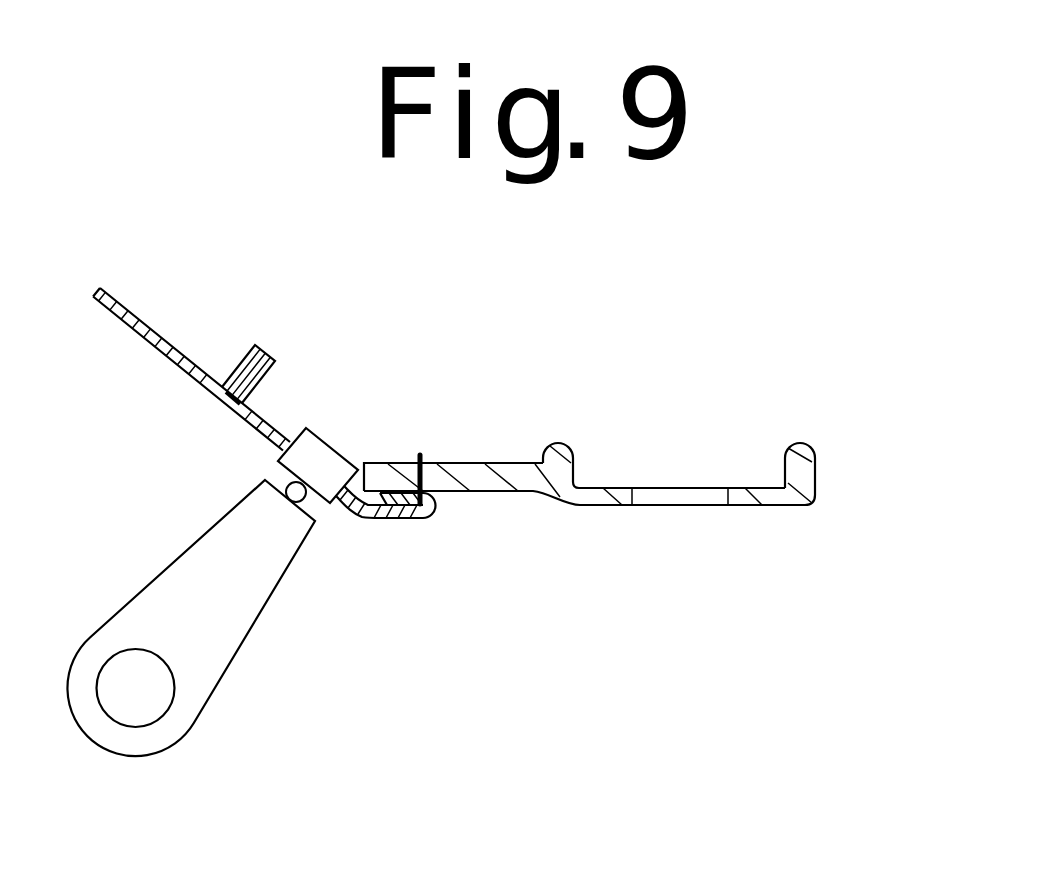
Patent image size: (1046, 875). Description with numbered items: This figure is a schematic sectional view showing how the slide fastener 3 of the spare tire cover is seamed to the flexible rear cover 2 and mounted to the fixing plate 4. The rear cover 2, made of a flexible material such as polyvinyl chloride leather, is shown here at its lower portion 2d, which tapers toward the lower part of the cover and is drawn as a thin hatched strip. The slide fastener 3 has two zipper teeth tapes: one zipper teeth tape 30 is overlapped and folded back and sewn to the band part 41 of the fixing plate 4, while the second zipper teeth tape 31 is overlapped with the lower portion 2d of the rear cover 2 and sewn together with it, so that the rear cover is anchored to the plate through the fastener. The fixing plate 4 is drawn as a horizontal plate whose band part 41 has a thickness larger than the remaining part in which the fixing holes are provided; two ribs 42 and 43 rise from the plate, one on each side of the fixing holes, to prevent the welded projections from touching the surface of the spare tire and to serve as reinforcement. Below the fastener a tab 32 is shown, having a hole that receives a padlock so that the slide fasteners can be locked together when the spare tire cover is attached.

The rear cover 2 is at (107, 314).
The left lower portion 2d is at (203, 388).
The slide fastener 3 is at (332, 450).
The zipper teeth tape 30 is at (392, 518).
The second zipper teeth tape 31 is at (257, 417).
The tab 32 is at (238, 618).
The fixing plate 4 is at (592, 479).
The band part 41 is at (485, 482).
The rib 42 is at (560, 441).
The rib 43 is at (802, 441).